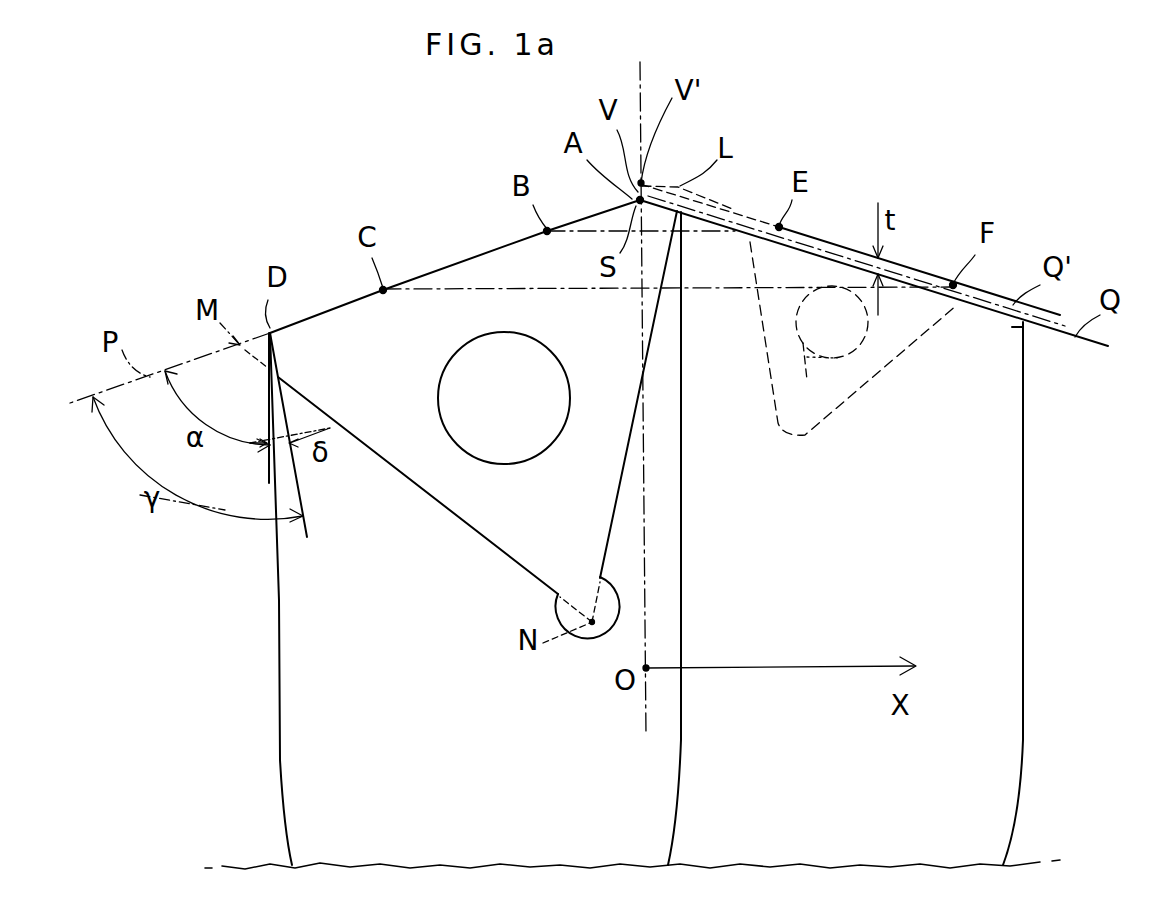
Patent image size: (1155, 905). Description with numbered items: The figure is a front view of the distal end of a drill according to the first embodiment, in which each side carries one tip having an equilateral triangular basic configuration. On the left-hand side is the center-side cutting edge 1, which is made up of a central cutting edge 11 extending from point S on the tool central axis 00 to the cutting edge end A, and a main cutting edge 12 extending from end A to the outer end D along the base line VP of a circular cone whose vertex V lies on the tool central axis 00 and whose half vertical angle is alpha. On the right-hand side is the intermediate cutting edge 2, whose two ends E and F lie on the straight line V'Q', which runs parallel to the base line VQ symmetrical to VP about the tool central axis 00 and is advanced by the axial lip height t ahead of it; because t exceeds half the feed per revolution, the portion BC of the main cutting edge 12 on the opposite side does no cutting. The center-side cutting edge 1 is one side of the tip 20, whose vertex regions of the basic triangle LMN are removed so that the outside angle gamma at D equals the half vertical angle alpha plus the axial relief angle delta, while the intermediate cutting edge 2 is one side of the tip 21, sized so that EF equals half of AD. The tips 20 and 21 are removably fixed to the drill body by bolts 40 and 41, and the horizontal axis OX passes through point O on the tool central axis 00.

The center-side cutting edge 1 is at (455, 208).
The central cutting edge 11 is at (625, 197).
The main cutting edge 12 is at (425, 273).
The intermediate cutting edge 2 is at (838, 245).
The tip 21 is at (878, 379).
The bolt 41 is at (831, 349).
The bolt 40 is at (488, 462).
The tip 20 is at (458, 513).
The tool central axis 00 is at (644, 630).